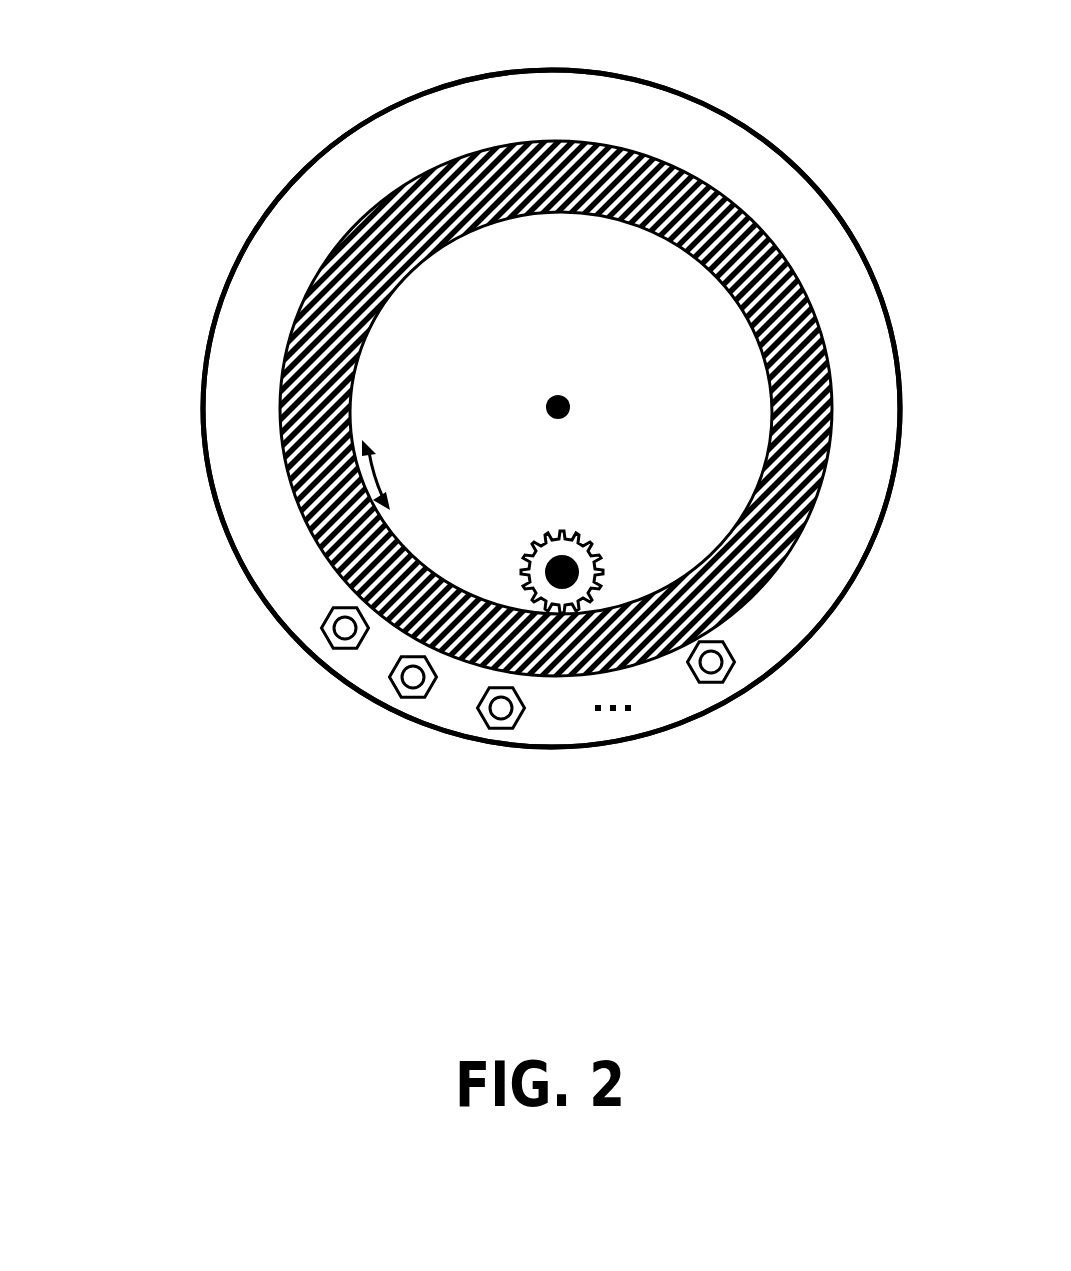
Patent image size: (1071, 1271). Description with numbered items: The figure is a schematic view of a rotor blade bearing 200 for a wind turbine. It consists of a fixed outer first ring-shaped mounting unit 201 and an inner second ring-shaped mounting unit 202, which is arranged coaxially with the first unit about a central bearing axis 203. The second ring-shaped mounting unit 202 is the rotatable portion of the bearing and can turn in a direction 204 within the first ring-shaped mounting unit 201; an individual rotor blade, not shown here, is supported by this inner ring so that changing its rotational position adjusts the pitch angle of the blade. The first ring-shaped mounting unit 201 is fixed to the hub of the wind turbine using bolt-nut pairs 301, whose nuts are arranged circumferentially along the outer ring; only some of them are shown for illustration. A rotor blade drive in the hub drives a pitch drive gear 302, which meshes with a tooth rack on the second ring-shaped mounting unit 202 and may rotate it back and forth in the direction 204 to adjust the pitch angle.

The rotor blade bearing 200 is at (776, 33).
The first ring-shaped mounting unit 201 is at (387, 145).
The second ring-shaped mounting unit 202 is at (310, 345).
The central bearing axis 203 is at (548, 397).
The direction of rotation 204 is at (373, 480).
The bolt-nut pairs 301 is at (333, 640).
The pitch drive gear 302 is at (575, 537).